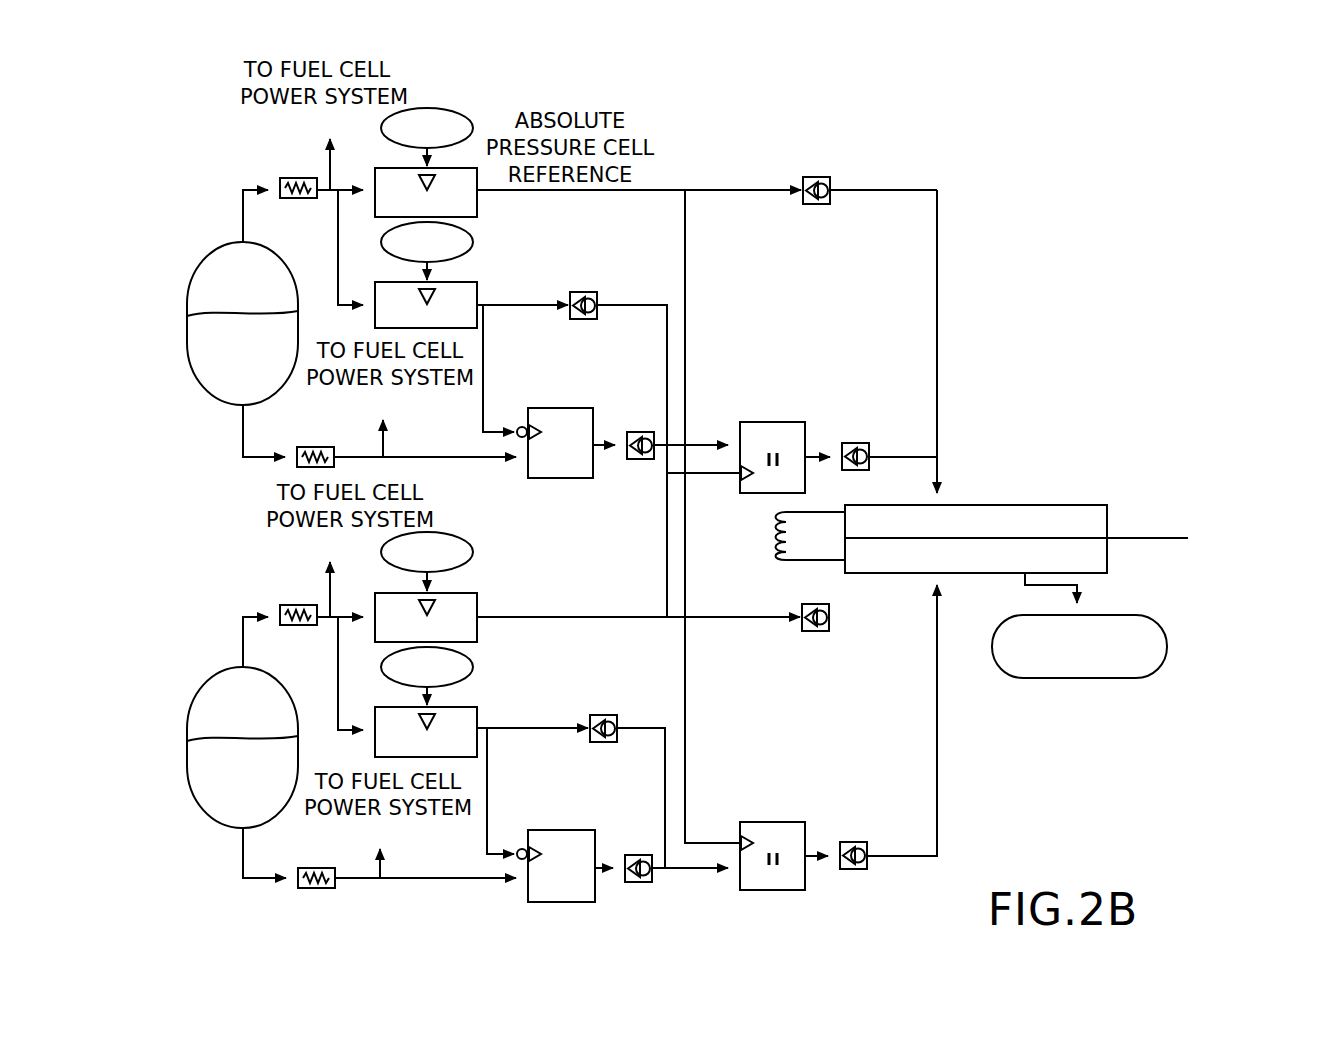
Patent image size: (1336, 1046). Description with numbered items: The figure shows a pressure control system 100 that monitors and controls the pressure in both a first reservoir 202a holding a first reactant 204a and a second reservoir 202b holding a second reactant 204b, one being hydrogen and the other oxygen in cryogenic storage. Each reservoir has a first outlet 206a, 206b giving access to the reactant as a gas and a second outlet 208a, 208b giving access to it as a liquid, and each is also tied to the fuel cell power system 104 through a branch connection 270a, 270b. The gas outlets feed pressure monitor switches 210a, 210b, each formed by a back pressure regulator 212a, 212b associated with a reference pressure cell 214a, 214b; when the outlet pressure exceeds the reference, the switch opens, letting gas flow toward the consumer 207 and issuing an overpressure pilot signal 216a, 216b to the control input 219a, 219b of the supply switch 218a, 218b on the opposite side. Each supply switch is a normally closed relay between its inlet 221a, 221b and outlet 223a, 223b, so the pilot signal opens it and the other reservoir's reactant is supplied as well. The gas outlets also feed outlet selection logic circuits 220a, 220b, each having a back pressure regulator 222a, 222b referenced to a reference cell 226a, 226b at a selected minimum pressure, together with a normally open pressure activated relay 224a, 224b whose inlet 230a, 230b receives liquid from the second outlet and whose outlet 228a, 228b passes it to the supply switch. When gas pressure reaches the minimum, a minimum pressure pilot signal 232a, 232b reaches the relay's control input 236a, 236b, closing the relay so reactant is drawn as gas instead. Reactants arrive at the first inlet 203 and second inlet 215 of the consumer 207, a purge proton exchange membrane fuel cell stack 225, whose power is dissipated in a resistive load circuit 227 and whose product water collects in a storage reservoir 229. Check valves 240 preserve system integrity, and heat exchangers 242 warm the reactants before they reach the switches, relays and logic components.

The pressure control system 100 is at (780, 123).
The fuel cell power system 104 is at (353, 494).
The first reservoir 202a is at (188, 283).
The second reservoir 202b is at (188, 710).
The first inlet of the consumer 203 is at (940, 503).
The first reactant 204a is at (242, 354).
The second reactant 204b is at (242, 778).
The first outlet of the first reservoir 206a is at (237, 240).
The first outlet of the second reservoir 206b is at (236, 667).
The consumer 207 is at (1070, 503).
The second outlet of the first reservoir 208a is at (238, 405).
The second outlet of the second reservoir 208b is at (240, 828).
The pressure monitor switch 210a is at (376, 172).
The pressure monitor switch 210b is at (375, 597).
The back pressure regulator 212a is at (475, 168).
The back pressure regulator 212b is at (477, 598).
The reference pressure cell 214a is at (440, 108).
The reference pressure cell 214b is at (473, 558).
The second inlet of the consumer 215 is at (940, 578).
The overpressure pilot signal 216a is at (686, 255).
The overpressure pilot signal 216b is at (666, 560).
The supply switch 218a is at (790, 422).
The supply switch 218b is at (790, 822).
The control input of the supply switch 219a is at (737, 487).
The control input of the supply switch 219b is at (740, 832).
The outlet selection logic circuit 220a is at (466, 398).
The outlet selection logic circuit 220b is at (476, 822).
The inlet of the supply switch 221a is at (738, 427).
The inlet of the supply switch 221b is at (738, 892).
The back pressure regulator 222a is at (477, 286).
The back pressure regulator 222b is at (477, 712).
The outlet of the supply switch 223a is at (812, 455).
The outlet of the supply switch 223b is at (812, 855).
The pressure activated relay 224a is at (558, 408).
The pressure activated relay 224b is at (560, 830).
The purge proton exchange membrane fuel cell stack 225 is at (1107, 512).
The reference cell 226a is at (473, 237).
The reference cell 226b is at (473, 672).
The resistive load circuit 227 is at (768, 537).
The outlet of the pressure activated relay 228a is at (598, 440).
The outlet of the pressure activated relay 228b is at (600, 862).
The storage reservoir 229 is at (1120, 678).
The inlet of the pressure activated relay 230a is at (520, 460).
The inlet of the pressure activated relay 230b is at (520, 882).
The minimum pressure pilot signal 232a is at (484, 320).
The minimum pressure pilot signal 232b is at (488, 750).
The control input of the pressure activated relay 236a is at (520, 427).
The control input of the pressure activated relay 236b is at (520, 850).
The check valve 240 is at (817, 177).
The heat exchanger 242 is at (295, 178).
The branch connection 270a is at (322, 195).
The branch connection 270b is at (333, 622).